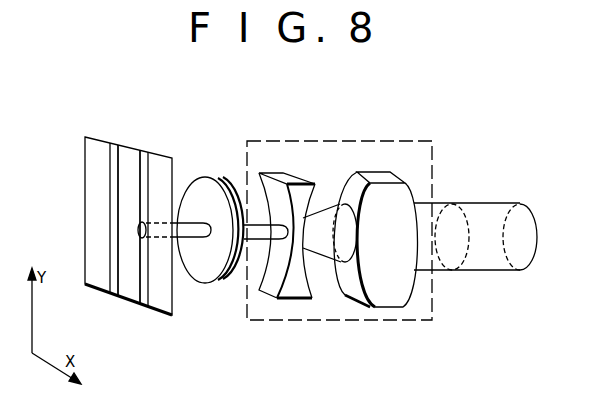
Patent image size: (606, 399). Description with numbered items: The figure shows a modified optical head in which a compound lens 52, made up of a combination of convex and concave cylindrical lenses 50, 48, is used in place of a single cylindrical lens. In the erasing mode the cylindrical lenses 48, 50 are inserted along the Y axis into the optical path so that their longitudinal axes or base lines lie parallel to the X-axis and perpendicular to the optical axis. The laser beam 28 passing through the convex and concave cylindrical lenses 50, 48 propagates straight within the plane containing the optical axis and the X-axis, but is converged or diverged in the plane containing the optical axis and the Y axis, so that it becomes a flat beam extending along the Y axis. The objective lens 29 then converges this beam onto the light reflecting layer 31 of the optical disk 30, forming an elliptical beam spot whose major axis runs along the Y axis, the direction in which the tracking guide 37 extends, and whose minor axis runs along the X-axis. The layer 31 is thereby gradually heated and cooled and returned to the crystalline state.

The laser beam 28 is at (490, 270).
The objective lens 29 is at (205, 282).
The optical disk 30 is at (123, 298).
The light reflecting layer 31 is at (128, 150).
The tracking guide 37 is at (114, 145).
The concave cylindrical lens 48 is at (296, 298).
The convex cylindrical lens 50 is at (391, 307).
The compound lens 52 is at (372, 140).